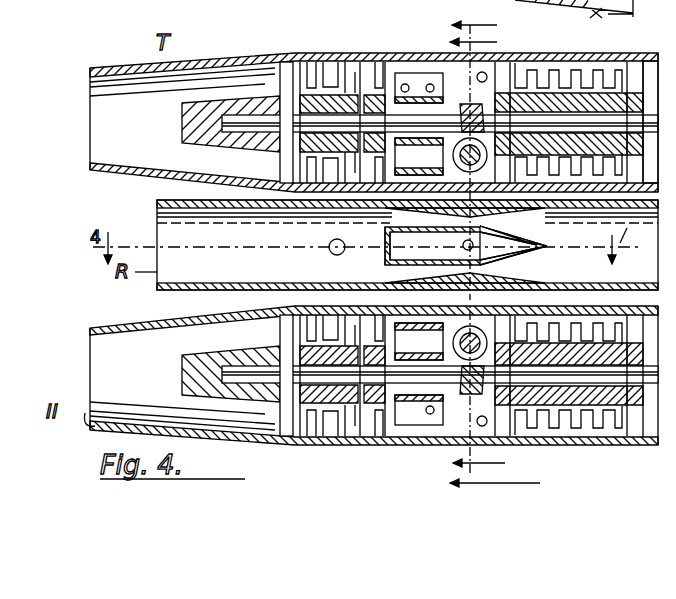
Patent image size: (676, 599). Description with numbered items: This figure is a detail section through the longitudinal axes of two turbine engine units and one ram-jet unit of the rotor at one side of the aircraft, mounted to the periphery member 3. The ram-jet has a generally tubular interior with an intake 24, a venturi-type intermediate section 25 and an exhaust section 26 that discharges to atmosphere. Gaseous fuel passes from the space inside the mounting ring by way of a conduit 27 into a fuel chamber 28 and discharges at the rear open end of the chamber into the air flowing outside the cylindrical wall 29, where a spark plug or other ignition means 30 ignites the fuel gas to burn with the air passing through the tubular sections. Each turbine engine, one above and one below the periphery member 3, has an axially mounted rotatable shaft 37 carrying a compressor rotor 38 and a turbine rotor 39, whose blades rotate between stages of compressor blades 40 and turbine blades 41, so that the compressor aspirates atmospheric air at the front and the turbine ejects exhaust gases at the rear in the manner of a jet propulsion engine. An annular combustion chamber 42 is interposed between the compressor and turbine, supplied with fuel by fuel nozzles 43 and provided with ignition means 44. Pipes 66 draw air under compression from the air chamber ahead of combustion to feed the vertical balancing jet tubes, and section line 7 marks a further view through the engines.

The periphery member 3 is at (486, 256).
The section line 7- 7 is at (504, 254).
The intake 24 is at (601, 248).
The intermediate section 25 is at (416, 268).
The ejection or exhaust section 26 is at (407, 245).
The conduit 27 is at (490, 233).
The fuel chamber 28 is at (380, 263).
The cylindrical wall 29 is at (493, 258).
The ignition means 30 is at (329, 250).
The shaft 37 is at (187, 124).
The compressor rotor 38 is at (602, 53).
The turbine rotor 39 is at (351, 70).
The compressor blades 40 is at (597, 60).
The turbine blades 41 is at (316, 432).
The annular combustion chamber 42 is at (405, 462).
The fuel nozzles 43 is at (425, 76).
The ignition means 44 is at (400, 76).
The pipes 66 is at (517, 62).